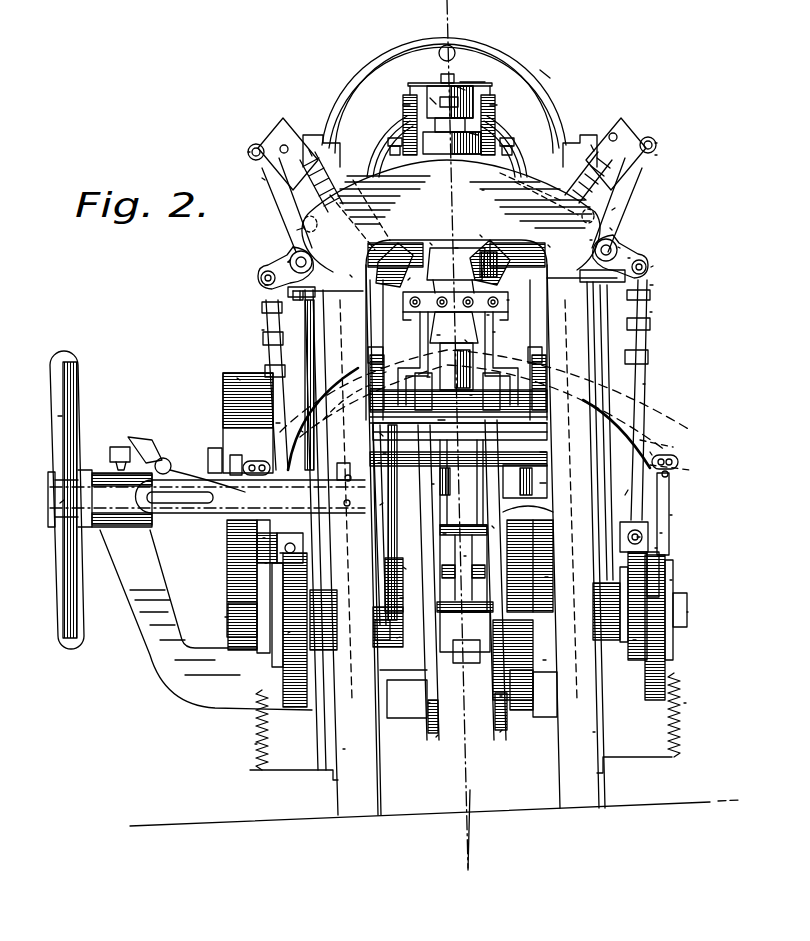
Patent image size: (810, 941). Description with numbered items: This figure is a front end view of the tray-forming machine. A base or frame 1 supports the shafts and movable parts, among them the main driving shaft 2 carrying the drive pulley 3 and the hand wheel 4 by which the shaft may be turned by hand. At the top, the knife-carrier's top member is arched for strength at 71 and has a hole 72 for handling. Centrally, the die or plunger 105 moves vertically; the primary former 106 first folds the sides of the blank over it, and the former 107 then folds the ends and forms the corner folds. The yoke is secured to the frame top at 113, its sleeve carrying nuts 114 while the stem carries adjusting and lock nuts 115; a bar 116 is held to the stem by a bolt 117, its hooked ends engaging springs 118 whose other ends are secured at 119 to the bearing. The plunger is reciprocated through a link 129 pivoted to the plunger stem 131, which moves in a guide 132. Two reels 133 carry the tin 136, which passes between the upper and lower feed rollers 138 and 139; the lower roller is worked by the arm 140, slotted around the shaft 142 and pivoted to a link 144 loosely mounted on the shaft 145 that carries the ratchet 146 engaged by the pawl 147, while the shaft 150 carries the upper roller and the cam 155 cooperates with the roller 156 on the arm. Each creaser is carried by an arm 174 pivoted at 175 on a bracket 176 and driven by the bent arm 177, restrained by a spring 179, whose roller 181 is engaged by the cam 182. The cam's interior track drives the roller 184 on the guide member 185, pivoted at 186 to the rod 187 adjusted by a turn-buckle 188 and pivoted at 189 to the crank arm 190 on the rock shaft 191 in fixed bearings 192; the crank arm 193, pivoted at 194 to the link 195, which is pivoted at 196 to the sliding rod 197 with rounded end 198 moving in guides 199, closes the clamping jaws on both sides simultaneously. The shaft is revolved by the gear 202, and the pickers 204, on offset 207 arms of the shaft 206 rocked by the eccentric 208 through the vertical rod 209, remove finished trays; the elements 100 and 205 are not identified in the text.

The base or frame 1 is at (343, 749).
The main driving shaft 2 is at (60, 503).
The drive pulley 3 is at (240, 377).
The hand wheel 4 is at (58, 418).
The arched portion 71 is at (545, 74).
The hole 72 is at (452, 47).
The plate 100 is at (458, 86).
The die or plunger 105 is at (437, 335).
The primary former 106 is at (508, 300).
The former 107 is at (448, 262).
The top of the frame 113 is at (350, 275).
The nuts 114 is at (478, 135).
The adjusting and lock nuts 115 is at (433, 100).
The bar 116 is at (470, 82).
The bolt 117 is at (437, 103).
The springs 118 is at (403, 105).
The spring attachment point 119 is at (503, 183).
The link 129 is at (464, 556).
The plunger stem 131 is at (443, 534).
The guide 132 is at (492, 526).
The reel 133 is at (436, 737).
The tin 136 is at (428, 703).
The upper feed roller 138 is at (427, 377).
The lower feed roller 139 is at (432, 484).
The arm 140 is at (380, 505).
The shaft 142 is at (688, 612).
The link 144 is at (383, 453).
The shaft 145 is at (540, 452).
The ratchet 146 is at (378, 463).
The pawl 147 is at (380, 434).
The shaft 150 is at (470, 395).
The cam 155 is at (397, 638).
The roller 156 is at (403, 567).
The arm 174 is at (300, 433).
The pivot 175 is at (650, 452).
The bracket 176 is at (621, 493).
The arm 177 is at (672, 515).
The spring 179 is at (255, 744).
The roller 181 is at (265, 538).
The cam 182 is at (267, 563).
The roller 184 is at (228, 617).
The guide member 185 is at (290, 633).
The pivot 186 is at (280, 553).
The rod 187 is at (278, 423).
The turn-buckle 188 is at (262, 330).
The pivot 189 is at (265, 285).
The crank arm 190 is at (290, 260).
The rock shaft 191 is at (290, 263).
The fixed bearings 192 is at (303, 300).
The crank arm 193 is at (293, 247).
The pivot 194 is at (297, 230).
The link 195 is at (263, 178).
The pivot 196 is at (248, 152).
The sliding rod 197 is at (309, 150).
The rounded lower end 198 is at (408, 280).
The guides 199 is at (430, 243).
The gear 202 is at (543, 660).
The pickers 204 is at (489, 317).
The pipe 205 is at (493, 332).
The shaft 206 is at (438, 420).
The offset 207 is at (383, 375).
The eccentric 208 is at (545, 577).
The vertical rod 209 is at (540, 483).